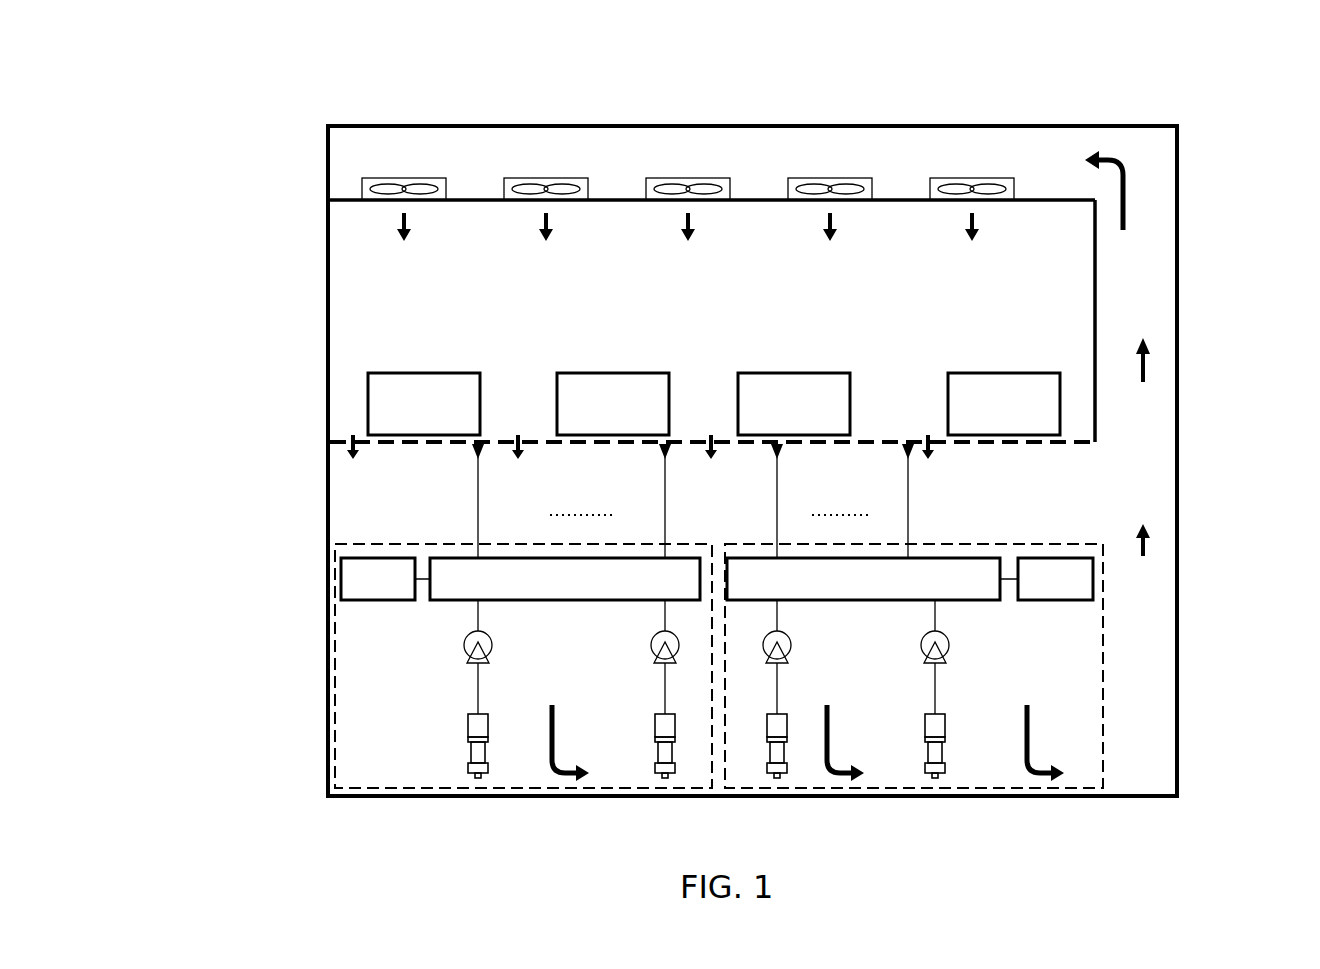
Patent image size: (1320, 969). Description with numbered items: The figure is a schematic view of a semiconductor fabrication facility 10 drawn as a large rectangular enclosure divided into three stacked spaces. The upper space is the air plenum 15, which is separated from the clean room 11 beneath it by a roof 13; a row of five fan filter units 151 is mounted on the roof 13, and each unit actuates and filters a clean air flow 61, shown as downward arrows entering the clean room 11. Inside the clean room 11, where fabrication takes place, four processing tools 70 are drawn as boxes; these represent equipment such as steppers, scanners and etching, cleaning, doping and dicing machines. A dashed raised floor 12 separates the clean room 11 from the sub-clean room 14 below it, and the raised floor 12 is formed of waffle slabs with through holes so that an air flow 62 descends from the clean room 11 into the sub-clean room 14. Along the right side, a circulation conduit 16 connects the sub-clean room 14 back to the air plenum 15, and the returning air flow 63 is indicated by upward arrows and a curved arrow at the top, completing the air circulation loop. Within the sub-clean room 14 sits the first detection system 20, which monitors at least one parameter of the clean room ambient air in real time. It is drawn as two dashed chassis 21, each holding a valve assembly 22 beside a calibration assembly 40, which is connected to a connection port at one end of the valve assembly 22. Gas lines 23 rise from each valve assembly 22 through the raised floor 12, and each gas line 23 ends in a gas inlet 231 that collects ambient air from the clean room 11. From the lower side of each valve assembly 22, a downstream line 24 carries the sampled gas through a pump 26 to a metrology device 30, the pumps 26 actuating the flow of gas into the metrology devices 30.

The semiconductor fabrication facility 10 is at (275, 111).
The clean room 11 is at (364, 336).
The raised floor 12 is at (373, 443).
The roof 13 is at (352, 202).
The sub-clean room 14 is at (355, 506).
The air plenum 15 is at (712, 167).
The fan filter units 151 is at (552, 178).
The circulation conduit 16 is at (1148, 304).
The first detection system 20 is at (320, 686).
The chassis 21 is at (335, 737).
The valve assemblies 22 is at (715, 579).
The gas lines 23 is at (777, 500).
The gas inlet 231 is at (777, 458).
The downstream line 24 is at (778, 688).
The pumps 26 is at (790, 648).
The metrology devices 30 is at (785, 772).
The calibration assembly 40 is at (717, 579).
The clean air flow 61 is at (551, 234).
The air flow 62 is at (519, 459).
The air flow 63 is at (1147, 374).
The processing tools 70 is at (714, 404).